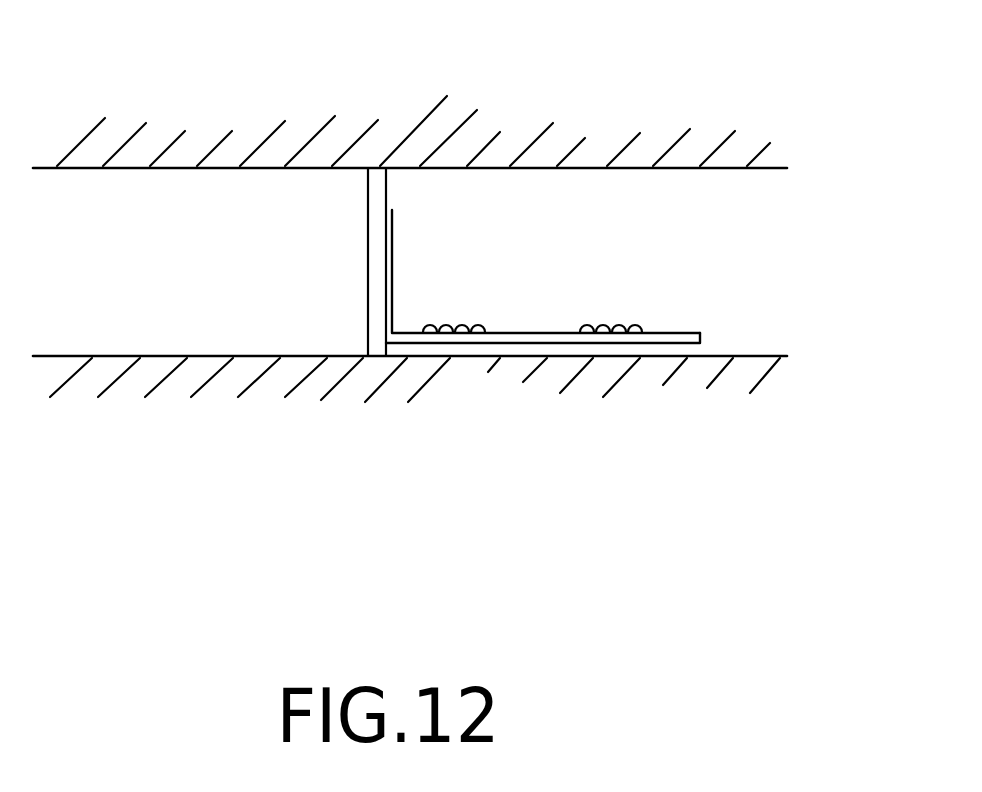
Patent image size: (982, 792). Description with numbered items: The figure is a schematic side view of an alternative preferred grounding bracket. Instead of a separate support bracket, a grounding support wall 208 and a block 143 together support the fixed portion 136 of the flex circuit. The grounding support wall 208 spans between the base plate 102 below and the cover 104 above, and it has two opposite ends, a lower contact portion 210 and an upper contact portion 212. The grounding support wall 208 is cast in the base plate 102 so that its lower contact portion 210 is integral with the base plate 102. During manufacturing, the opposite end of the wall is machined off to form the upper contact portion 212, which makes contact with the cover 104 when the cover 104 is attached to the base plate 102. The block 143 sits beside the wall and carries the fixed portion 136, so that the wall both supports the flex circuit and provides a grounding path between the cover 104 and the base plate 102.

The base plate 102 is at (487, 438).
The cover 104 is at (557, 95).
The fixed portion 136 is at (542, 331).
The block 143 is at (787, 318).
The grounding support wall 208 is at (386, 278).
The lower contact portion 210 is at (368, 455).
The upper contact portion 212 is at (377, 167).